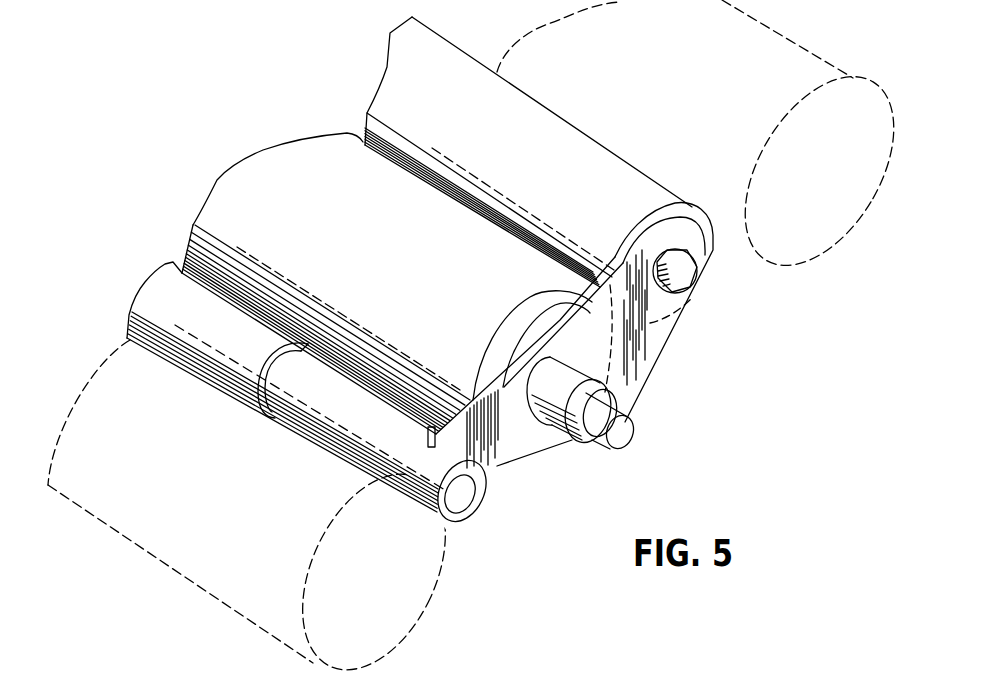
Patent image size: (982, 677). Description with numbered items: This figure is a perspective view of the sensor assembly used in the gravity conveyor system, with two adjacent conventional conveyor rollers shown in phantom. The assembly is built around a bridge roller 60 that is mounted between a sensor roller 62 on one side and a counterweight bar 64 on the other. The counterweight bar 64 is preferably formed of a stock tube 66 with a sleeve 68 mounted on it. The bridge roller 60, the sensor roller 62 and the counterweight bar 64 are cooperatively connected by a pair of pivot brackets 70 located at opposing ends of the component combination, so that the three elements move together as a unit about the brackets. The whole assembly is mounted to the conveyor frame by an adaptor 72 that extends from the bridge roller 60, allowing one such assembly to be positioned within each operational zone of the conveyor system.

The bridge roller 60 is at (303, 167).
The sensor roller 62 is at (607, 208).
The counterweight bar 64 is at (174, 216).
The stock tube 66 is at (437, 478).
The sleeve 68 is at (203, 325).
The pivot bracket 70 is at (662, 345).
The adaptor 72 is at (600, 425).